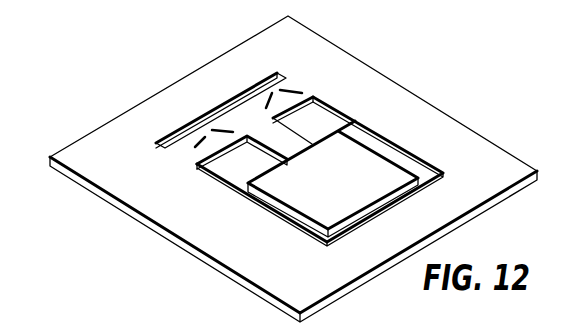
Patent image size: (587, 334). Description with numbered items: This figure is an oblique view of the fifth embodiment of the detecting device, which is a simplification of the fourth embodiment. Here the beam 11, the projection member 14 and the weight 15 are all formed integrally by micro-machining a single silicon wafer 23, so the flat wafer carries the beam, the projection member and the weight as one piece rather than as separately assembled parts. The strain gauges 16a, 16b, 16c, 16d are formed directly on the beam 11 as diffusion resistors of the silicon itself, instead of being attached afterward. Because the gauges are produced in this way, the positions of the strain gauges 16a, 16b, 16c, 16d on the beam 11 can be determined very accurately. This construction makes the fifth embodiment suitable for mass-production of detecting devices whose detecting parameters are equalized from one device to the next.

The beam 11 is at (300, 88).
The projection member 14 is at (293, 143).
The weight 15 is at (377, 163).
The strain gauge 16a is at (200, 147).
The strain gauge 16b is at (215, 125).
The strain gauge 16c is at (264, 95).
The strain gauge 16d is at (289, 82).
The silicon wafer 23 is at (400, 97).